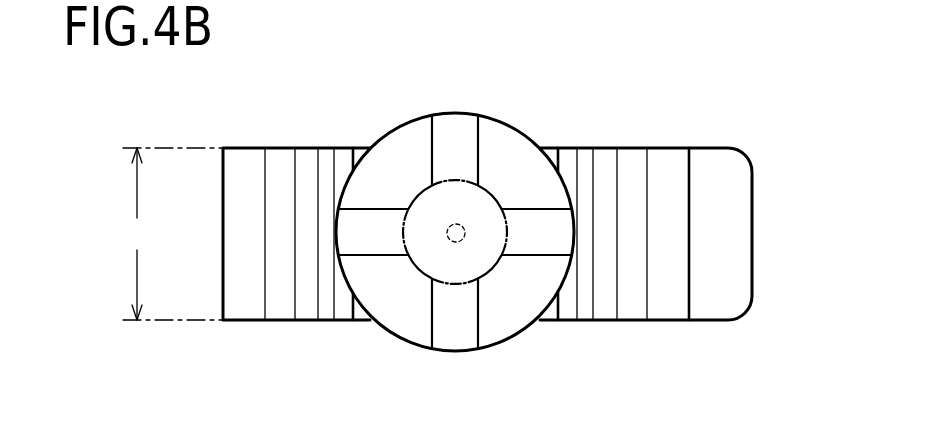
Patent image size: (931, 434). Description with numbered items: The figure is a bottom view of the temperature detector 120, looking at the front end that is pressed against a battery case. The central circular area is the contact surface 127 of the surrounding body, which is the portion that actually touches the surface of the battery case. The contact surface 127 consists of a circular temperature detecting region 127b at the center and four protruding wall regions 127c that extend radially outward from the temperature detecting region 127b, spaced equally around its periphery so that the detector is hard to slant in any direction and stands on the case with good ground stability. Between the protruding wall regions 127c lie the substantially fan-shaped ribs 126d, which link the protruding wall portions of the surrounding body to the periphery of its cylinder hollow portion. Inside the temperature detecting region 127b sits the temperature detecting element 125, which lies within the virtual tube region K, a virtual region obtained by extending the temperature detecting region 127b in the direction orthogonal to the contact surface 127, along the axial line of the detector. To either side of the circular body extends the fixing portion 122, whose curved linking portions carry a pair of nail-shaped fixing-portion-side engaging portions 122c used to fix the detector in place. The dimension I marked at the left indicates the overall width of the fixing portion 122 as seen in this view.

The temperature detector 120 is at (654, 124).
The fixing portion 122 is at (278, 312).
The fixing-portion-side engaging portion 122c is at (245, 160).
The temperature detecting element 125 is at (448, 228).
The rib 126d is at (397, 318).
The contact surface 127 is at (455, 132).
The temperature detecting region 127b is at (487, 257).
The protruding wall region 127c is at (457, 340).
The virtual tube region K is at (508, 226).
The roller width dimension I is at (173, 234).